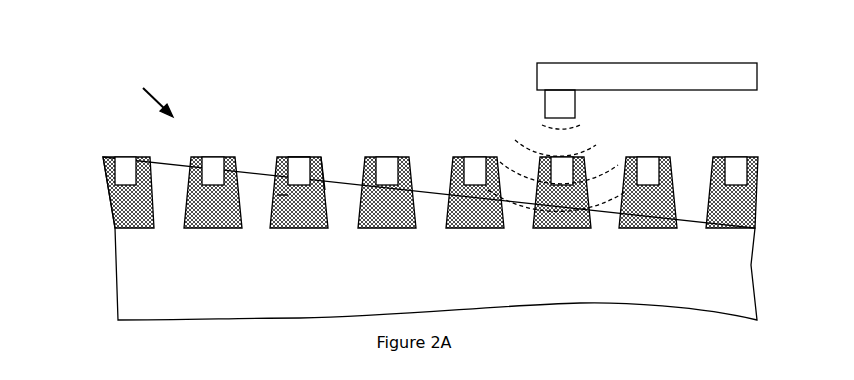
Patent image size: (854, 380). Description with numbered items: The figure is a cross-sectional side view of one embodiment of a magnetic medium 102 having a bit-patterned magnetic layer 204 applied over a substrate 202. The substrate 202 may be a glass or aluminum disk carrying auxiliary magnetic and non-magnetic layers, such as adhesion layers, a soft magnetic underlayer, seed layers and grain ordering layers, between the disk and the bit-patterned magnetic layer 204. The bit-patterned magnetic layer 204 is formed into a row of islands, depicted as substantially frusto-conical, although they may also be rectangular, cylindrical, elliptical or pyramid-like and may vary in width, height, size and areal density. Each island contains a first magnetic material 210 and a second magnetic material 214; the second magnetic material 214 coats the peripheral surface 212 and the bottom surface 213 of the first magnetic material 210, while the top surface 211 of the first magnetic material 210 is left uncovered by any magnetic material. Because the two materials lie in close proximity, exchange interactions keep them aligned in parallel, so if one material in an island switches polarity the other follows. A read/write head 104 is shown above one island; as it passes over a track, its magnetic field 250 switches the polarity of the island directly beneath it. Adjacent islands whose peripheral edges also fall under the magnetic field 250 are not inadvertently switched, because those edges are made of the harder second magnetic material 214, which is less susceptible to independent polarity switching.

The magnetic medium 102 is at (145, 93).
The read/write head 104 is at (634, 87).
The substrate 202 is at (126, 270).
The bit-patterned magnetic layer 204 is at (100, 157).
The first magnetic material 210 is at (285, 157).
The top surface 211 is at (300, 157).
The peripheral surface 212 is at (320, 158).
The bottom surface 213 is at (313, 191).
The second magnetic material 214 is at (286, 196).
The magnetic field 250 is at (594, 142).